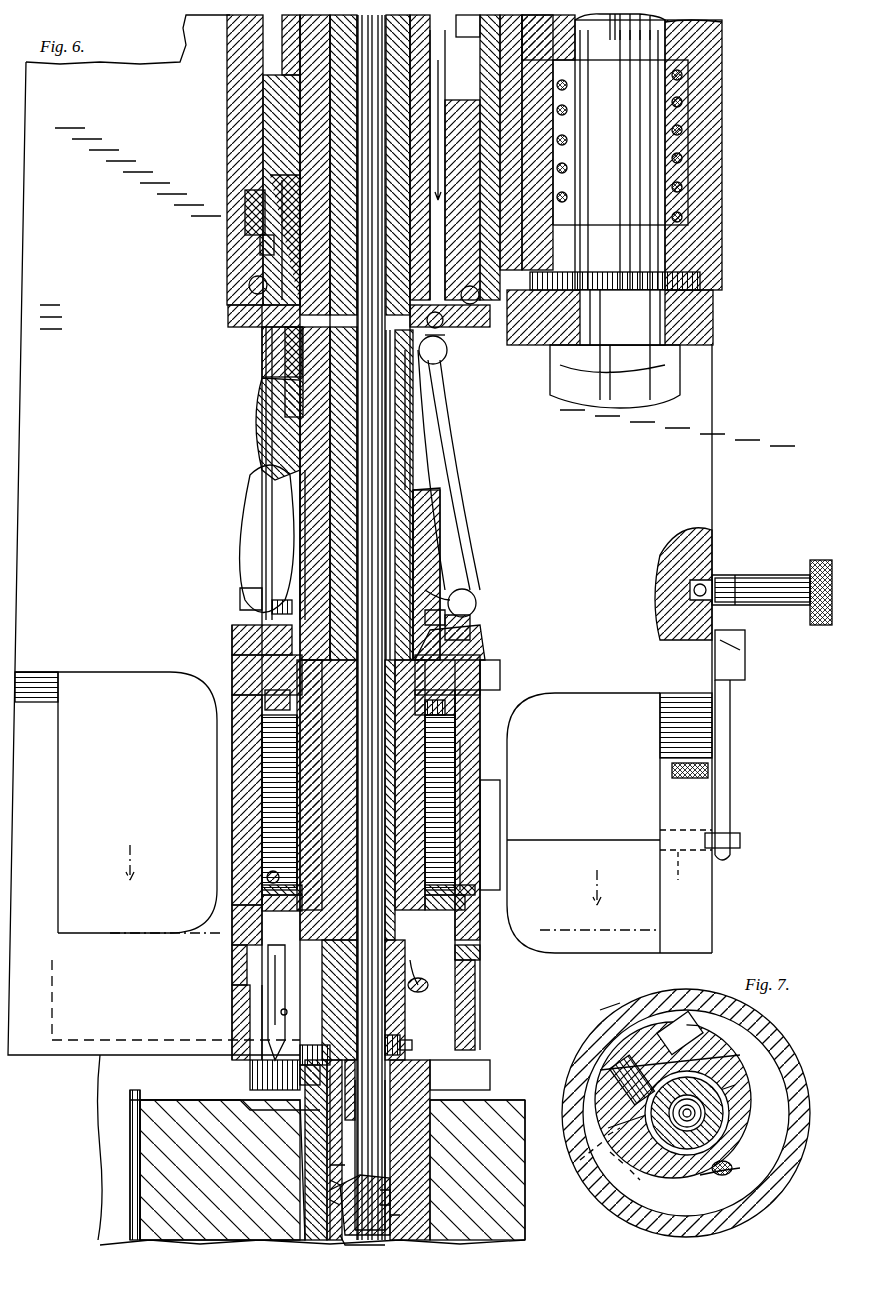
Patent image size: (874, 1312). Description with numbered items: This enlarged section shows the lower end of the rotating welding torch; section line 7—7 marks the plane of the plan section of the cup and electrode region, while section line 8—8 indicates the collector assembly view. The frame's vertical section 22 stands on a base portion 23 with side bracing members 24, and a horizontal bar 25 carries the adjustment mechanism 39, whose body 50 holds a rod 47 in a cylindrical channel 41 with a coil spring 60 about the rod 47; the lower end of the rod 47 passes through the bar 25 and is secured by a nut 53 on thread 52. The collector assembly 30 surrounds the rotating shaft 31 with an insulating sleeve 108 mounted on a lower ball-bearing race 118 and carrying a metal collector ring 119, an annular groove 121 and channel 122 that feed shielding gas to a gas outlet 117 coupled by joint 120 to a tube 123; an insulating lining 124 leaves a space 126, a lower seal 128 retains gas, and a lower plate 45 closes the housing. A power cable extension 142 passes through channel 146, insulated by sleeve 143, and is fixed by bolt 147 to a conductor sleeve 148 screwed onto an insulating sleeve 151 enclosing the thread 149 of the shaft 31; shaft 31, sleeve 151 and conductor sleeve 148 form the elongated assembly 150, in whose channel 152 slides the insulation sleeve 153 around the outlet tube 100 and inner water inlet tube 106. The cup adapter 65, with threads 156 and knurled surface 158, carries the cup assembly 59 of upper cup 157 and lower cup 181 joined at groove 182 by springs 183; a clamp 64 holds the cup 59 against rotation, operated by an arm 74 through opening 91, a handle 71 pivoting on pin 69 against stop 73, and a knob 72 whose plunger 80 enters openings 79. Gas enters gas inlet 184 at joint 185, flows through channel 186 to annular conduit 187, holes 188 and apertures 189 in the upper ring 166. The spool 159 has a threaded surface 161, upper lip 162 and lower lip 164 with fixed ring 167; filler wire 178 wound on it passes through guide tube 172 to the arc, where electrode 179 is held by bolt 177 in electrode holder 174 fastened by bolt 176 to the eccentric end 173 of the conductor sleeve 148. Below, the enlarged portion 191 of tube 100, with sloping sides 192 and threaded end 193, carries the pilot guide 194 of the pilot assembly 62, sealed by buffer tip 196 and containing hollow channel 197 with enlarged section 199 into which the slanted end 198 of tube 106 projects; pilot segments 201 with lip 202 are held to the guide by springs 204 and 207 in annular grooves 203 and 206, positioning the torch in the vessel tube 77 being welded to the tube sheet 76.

In FIG. 6, the section line 7— 7 is at (385, 878).
In FIG. 6, the section line 8— 8 is at (375, 55).
In FIG. 6, the vertical section 22 is at (627, 475).
In FIG. 6, the base portion 23 is at (95, 1035).
In FIG. 6, the side bracing members 24 is at (45, 825).
In FIG. 6, the horizontal bar 25 is at (715, 318).
In FIG. 6, the collector assembly 30 is at (252, 198).
In FIG. 6, the rotating shaft 31 is at (472, 430).
In FIG. 6, the adjustment mechanism 39 is at (733, 140).
In FIG. 6, the cylindrical channel 41 is at (578, 68).
In FIG. 6, the bottom plate 45 is at (228, 315).
In FIG. 6, the rod 47 is at (650, 55).
In FIG. 6, the body 50 is at (718, 175).
In FIG. 6, the thread 52 is at (713, 348).
In FIG. 6, the nut 53 is at (685, 382).
In FIG. 7, the cup assembly 59 is at (770, 1200).
In FIG. 6, the coil spring 60 is at (690, 105).
In FIG. 6, the pilot assembly 62 is at (406, 1146).
In FIG. 6, the clamp 64 is at (492, 815).
In FIG. 6, the cup adapter 65 is at (470, 640).
In FIG. 6, the pin 69 is at (737, 773).
In FIG. 6, the handle 71 is at (732, 803).
In FIG. 6, the knob 72 is at (760, 575).
In FIG. 6, the stop 73 is at (745, 668).
In FIG. 6, the arm 74 is at (742, 838).
In FIG. 6, the tube sheet 76 is at (150, 1165).
In FIG. 6, the vessel tube 77 is at (130, 1100).
In FIG. 6, the openings 79 is at (715, 585).
In FIG. 6, the spring-loaded plunger 80 is at (818, 560).
In FIG. 6, the opening 91 is at (683, 873).
In FIG. 6, the outlet tube 100 is at (440, 488).
In FIG. 7, the outlet tube 100 is at (702, 1122).
In FIG. 6, the water inlet tube 106 is at (392, 465).
In FIG. 7, the water inlet tube 106 is at (696, 1113).
In FIG. 6, the insulating sleeve 108 is at (470, 115).
In FIG. 6, the gas outlet 117 is at (445, 345).
In FIG. 6, the lower ball-bearing race 118 is at (250, 285).
In FIG. 6, the metal collector ring 119 is at (265, 150).
In FIG. 6, the joint 120 is at (450, 360).
In FIG. 6, the annular groove 121 is at (485, 38).
In FIG. 6, the channel 122 is at (440, 120).
In FIG. 6, the tube 123 is at (445, 378).
In FIG. 6, the insulating lining 124 is at (235, 52).
In FIG. 6, the space 126 is at (485, 80).
In FIG. 6, the lower seal 128 is at (262, 245).
In FIG. 6, the power cable extension 142 is at (262, 440).
In FIG. 6, the insulating sleeve 143 is at (265, 345).
In FIG. 6, the channel 146 is at (285, 362).
In FIG. 6, the bolt 147 is at (248, 592).
In FIG. 6, the conductor sleeve 148 is at (272, 606).
In FIG. 6, the thread 149 is at (300, 555).
In FIG. 6, the elongated assembly 150 is at (279, 568).
In FIG. 6, the insulating sleeve 151 is at (451, 523).
In FIG. 6, the channel 152 is at (415, 405).
In FIG. 6, the insulation sleeve 153 is at (262, 826).
In FIG. 7, the insulation sleeve 153 is at (625, 1098).
In FIG. 6, the threads 156 is at (500, 680).
In FIG. 6, the upper cup 157 is at (480, 855).
In FIG. 6, the knurled surface 158 is at (490, 630).
In FIG. 6, the spool 159 is at (470, 770).
In FIG. 6, the threaded surface 161 is at (262, 768).
In FIG. 6, the upper lip 162 is at (240, 702).
In FIG. 6, the lower lip 164 is at (465, 905).
In FIG. 6, the upper ring 166 is at (445, 725).
In FIG. 6, the fixed ring 167 is at (265, 868).
In FIG. 6, the guide tube 172 is at (420, 992).
In FIG. 7, the guide tube 172 is at (703, 1178).
In FIG. 6, the eccentric end 173 is at (285, 975).
In FIG. 7, the eccentric end 173 is at (705, 1078).
In FIG. 6, the electrode holder 174 is at (238, 990).
In FIG. 7, the electrode holder 174 is at (730, 1060).
In FIG. 6, the bolt 176 is at (268, 875).
In FIG. 7, the bolt 176 is at (682, 1028).
In FIG. 6, the bolt 177 is at (303, 1011).
In FIG. 6, the filler wire 178 is at (262, 812).
In FIG. 7, the filler wire 178 is at (628, 1180).
In FIG. 6, the electrode 179 is at (250, 1072).
In FIG. 7, the electrode 179 is at (580, 1175).
In FIG. 6, the lower cup 181 is at (475, 1040).
In FIG. 6, the groove 182 is at (235, 940).
In FIG. 6, the springs 183 is at (240, 970).
In FIG. 7, the springs 183 is at (588, 991).
In FIG. 6, the gas inlet 184 is at (465, 615).
In FIG. 6, the joint 185 is at (476, 600).
In FIG. 6, the channel 186 is at (475, 665).
In FIG. 6, the annular conduit 187 is at (240, 640).
In FIG. 6, the holes 188 is at (235, 665).
In FIG. 6, the apertures 189 is at (268, 722).
In FIG. 6, the enlarged portion 191 is at (262, 1010).
In FIG. 6, the sloping sides 192 is at (472, 955).
In FIG. 6, the threaded end portion 193 is at (300, 1078).
In FIG. 6, the pilot guide 194 is at (375, 1110).
In FIG. 6, the buffer tip 196 is at (370, 1240).
In FIG. 6, the hollow channel 197 is at (392, 1198).
In FIG. 6, the slanted end 198 is at (390, 1172).
In FIG. 6, the enlarged section 199 is at (330, 1110).
In FIG. 6, the pilot segments 201 is at (325, 1164).
In FIG. 6, the lip 202 is at (460, 1075).
In FIG. 6, the annular groove 203 is at (300, 1050).
In FIG. 6, the springs 204 is at (405, 1050).
In FIG. 6, the lower annular groove 206 is at (325, 1185).
In FIG. 6, the springs 207 is at (325, 1206).